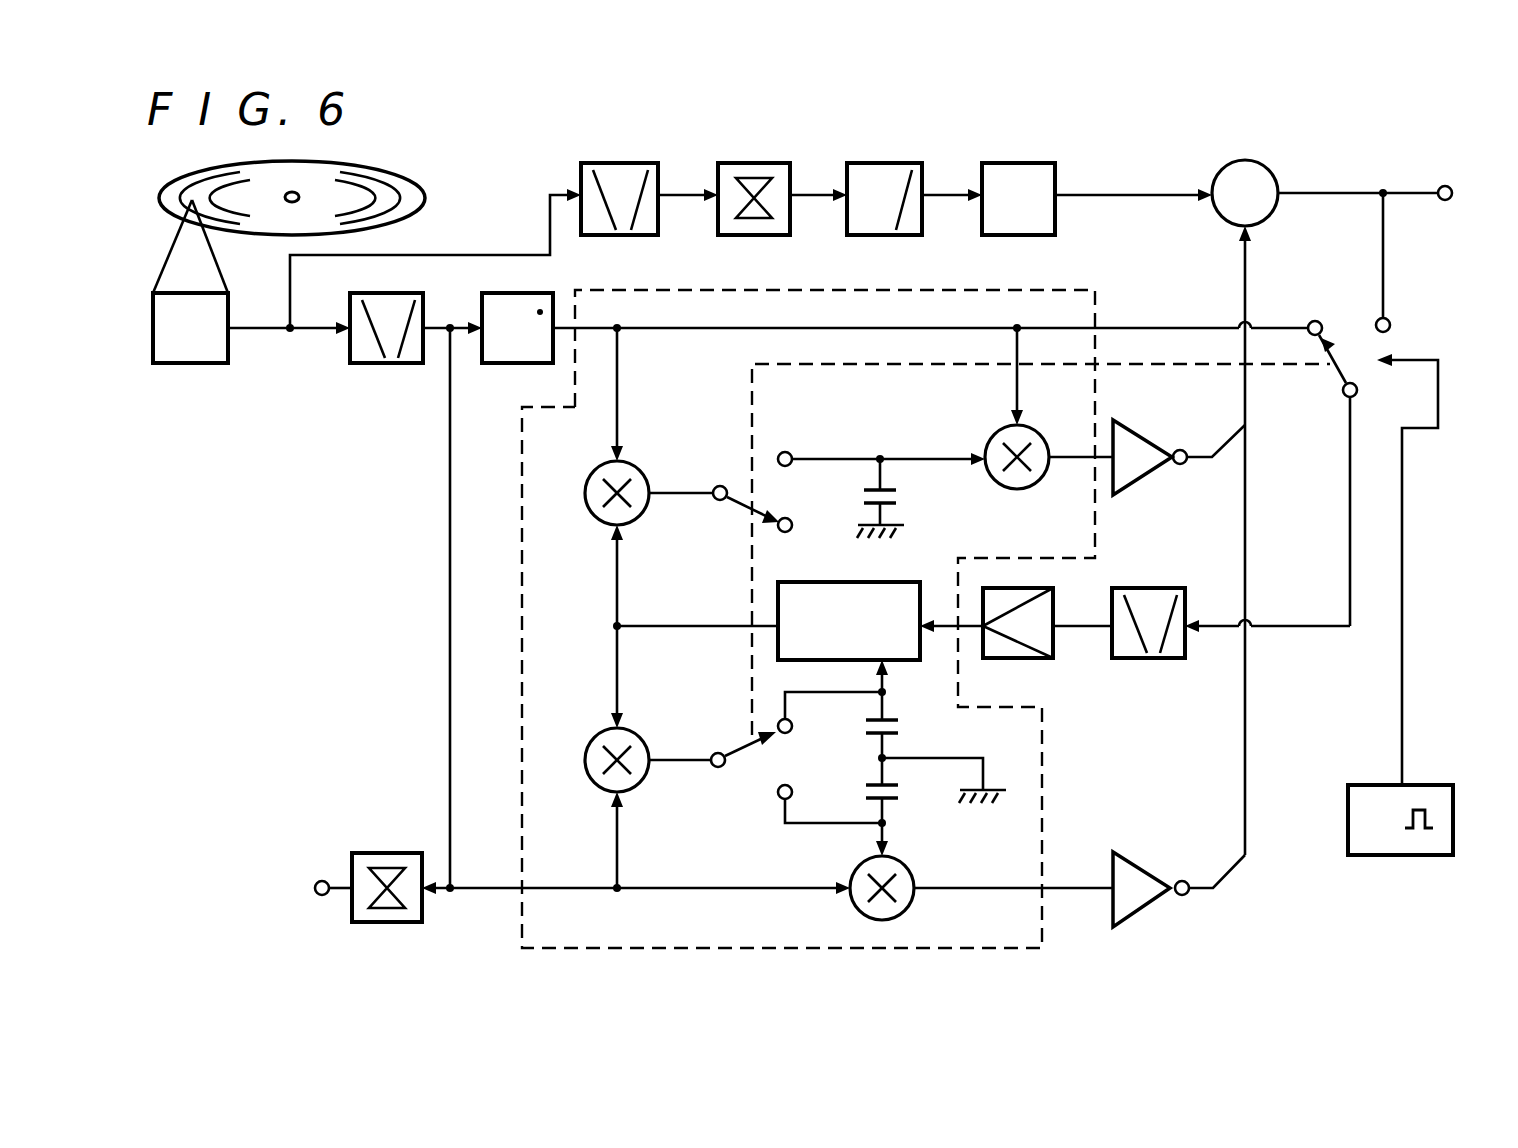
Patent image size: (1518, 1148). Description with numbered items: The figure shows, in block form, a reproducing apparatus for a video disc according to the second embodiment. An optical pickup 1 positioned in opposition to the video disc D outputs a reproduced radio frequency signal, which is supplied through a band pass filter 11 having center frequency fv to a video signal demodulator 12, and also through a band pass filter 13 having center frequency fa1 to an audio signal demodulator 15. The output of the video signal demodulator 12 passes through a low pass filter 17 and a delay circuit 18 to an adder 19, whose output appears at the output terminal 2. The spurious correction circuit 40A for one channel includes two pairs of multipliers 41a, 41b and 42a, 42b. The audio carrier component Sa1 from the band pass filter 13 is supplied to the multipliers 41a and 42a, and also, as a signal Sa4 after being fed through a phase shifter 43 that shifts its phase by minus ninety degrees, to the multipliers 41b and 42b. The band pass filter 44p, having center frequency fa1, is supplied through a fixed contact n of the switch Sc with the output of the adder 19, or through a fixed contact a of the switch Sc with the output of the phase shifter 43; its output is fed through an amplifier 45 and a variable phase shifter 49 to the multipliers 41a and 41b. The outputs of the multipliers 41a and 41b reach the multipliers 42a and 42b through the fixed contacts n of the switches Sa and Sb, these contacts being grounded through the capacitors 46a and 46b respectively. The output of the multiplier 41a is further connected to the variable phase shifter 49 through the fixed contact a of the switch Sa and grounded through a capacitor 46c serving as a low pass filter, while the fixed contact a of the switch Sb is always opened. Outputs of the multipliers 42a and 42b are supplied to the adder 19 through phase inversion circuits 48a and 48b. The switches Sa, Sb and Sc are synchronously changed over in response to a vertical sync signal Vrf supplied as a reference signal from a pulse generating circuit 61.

The video disc D is at (425, 198).
The optical pickup 1 is at (200, 363).
The output terminal 2 is at (1446, 200).
The band pass filter 11 is at (622, 235).
The video signal demodulator 12 is at (752, 235).
The band pass filter 13 is at (392, 363).
The audio signal demodulator 15 is at (425, 905).
The low pass filter 17 is at (875, 235).
The delay circuit 18 is at (1005, 235).
The adder 19 is at (1220, 222).
The spurious correction circuit 40A is at (522, 685).
The multiplier 41a is at (590, 754).
The multiplier 41b is at (586, 518).
The multiplier 42a is at (905, 910).
The multiplier 42b is at (1028, 488).
The phase shifter 43 is at (515, 363).
The band pass filter 44p is at (1150, 658).
The amplifier 45 is at (1040, 658).
The capacitor 46a is at (903, 790).
The capacitor 46b is at (905, 508).
The capacitor 46c is at (900, 727).
The phase inversion circuit 48a is at (1148, 905).
The phase inversion circuit 48b is at (1148, 475).
The variable phase shifter 49 is at (892, 582).
The pulse generating circuit 61 is at (1385, 855).
The switch Sa is at (752, 772).
The switch Sb is at (750, 476).
The switch Sc is at (1400, 345).
The audio carrier component Sa1 is at (562, 890).
The signal Sa4 is at (617, 366).
The vertical sync. signal Vrf is at (1402, 700).